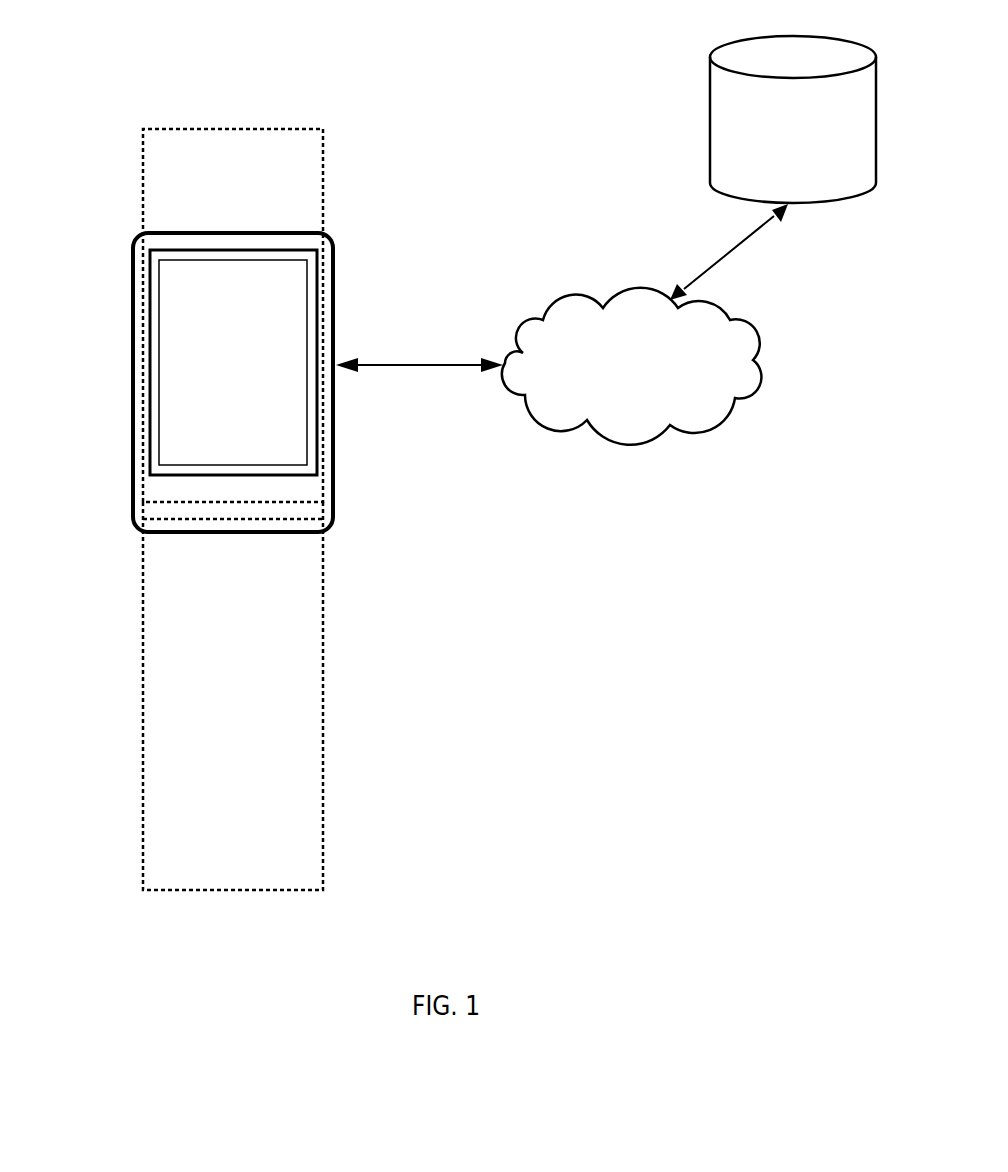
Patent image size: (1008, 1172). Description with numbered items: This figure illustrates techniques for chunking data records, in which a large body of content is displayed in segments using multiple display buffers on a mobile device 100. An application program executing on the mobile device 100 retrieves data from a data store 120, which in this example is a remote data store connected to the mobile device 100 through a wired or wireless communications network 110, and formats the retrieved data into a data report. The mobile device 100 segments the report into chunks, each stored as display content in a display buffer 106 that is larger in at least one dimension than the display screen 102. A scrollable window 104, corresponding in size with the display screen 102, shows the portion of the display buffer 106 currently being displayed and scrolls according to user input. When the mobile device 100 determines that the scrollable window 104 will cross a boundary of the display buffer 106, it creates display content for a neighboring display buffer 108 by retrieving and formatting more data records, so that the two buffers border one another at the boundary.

The mobile device 100 is at (333, 267).
The display screen 102 is at (317, 332).
The scrollable window 104 is at (159, 315).
The display buffer 106 is at (317, 129).
The display buffer 108 is at (324, 695).
The communications network 110 is at (597, 422).
The data store 120 is at (778, 193).